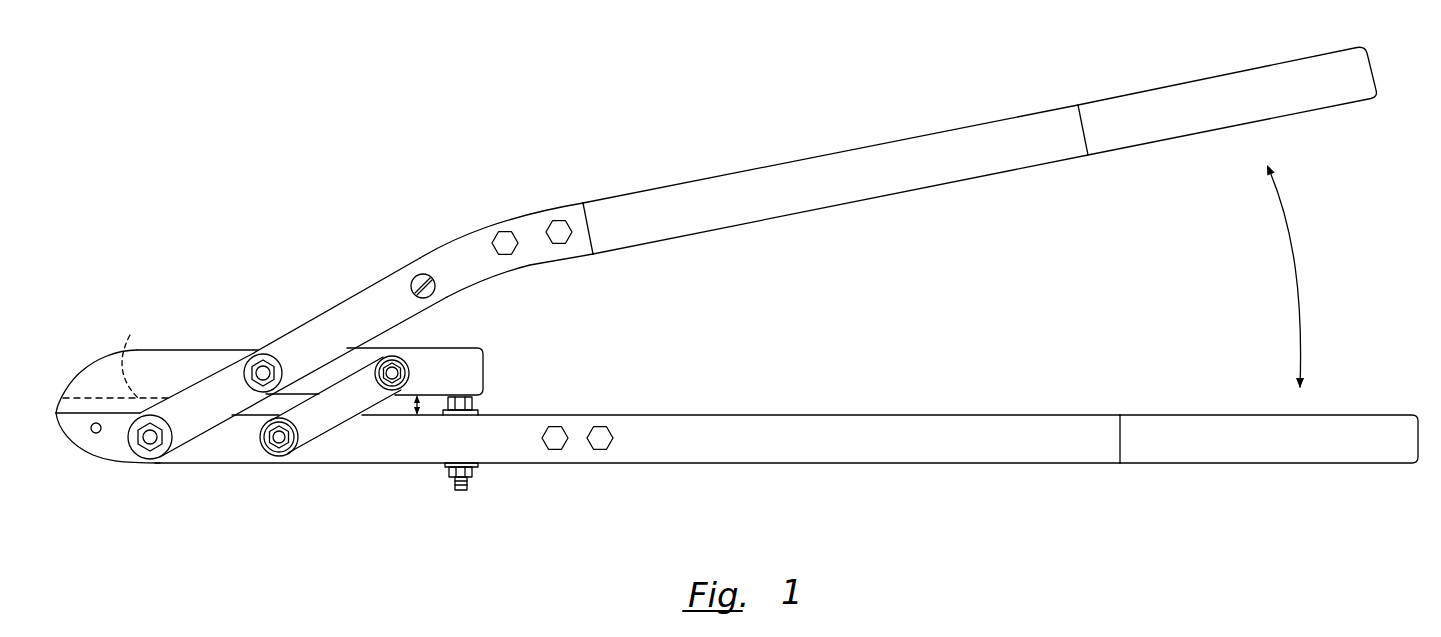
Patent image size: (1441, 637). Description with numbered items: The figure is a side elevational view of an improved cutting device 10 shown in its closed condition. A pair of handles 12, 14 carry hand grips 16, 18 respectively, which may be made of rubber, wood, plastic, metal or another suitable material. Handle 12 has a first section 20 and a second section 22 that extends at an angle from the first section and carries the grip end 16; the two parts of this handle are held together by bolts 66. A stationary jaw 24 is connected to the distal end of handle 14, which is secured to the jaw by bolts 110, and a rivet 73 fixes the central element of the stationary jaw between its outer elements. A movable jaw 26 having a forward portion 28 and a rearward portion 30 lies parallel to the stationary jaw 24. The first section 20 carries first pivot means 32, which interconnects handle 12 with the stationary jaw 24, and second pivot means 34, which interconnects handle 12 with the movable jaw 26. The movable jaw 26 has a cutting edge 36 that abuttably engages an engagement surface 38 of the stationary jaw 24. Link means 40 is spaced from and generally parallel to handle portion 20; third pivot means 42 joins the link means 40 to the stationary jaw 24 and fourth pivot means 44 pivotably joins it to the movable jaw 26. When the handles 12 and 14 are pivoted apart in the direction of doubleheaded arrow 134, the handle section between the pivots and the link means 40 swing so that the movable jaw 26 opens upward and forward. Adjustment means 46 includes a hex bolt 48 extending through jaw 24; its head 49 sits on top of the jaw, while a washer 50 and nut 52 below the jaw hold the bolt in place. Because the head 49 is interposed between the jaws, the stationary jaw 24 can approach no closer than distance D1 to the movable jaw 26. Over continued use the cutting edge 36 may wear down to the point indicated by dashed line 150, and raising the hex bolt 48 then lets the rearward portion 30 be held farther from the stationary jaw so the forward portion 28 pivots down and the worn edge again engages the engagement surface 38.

The cutting device 10 is at (613, 51).
The handle 12 is at (714, 236).
The handle 14 is at (784, 411).
The hand grip 16 is at (1154, 96).
The hand grip 18 is at (1176, 427).
The first section 20 is at (362, 292).
The second section 22 is at (533, 215).
The stationary jaw 24 is at (121, 467).
The movable jaw 26 is at (197, 347).
The forward portion 28 is at (84, 370).
The rearward portion 30 is at (473, 370).
The first pivot means 32 is at (152, 446).
The second pivot means 34 is at (268, 352).
The cutting edge 36 is at (84, 412).
The engagement surface 38 is at (83, 415).
The link means 40 is at (317, 441).
The third pivot means 42 is at (273, 452).
The fourth pivot means 44 is at (394, 357).
The adjustment means 46 is at (440, 475).
The hex bolt 48 is at (457, 490).
The head 49 is at (476, 403).
The washer 50 is at (479, 470).
The nut 52 is at (470, 482).
The bolts 66 is at (518, 254).
The rivet 73 is at (95, 434).
The bolts 110 is at (564, 427).
The doubleheaded arrow 134 is at (1306, 296).
The dashed line 150 is at (148, 362).
The distance D1 is at (413, 403).